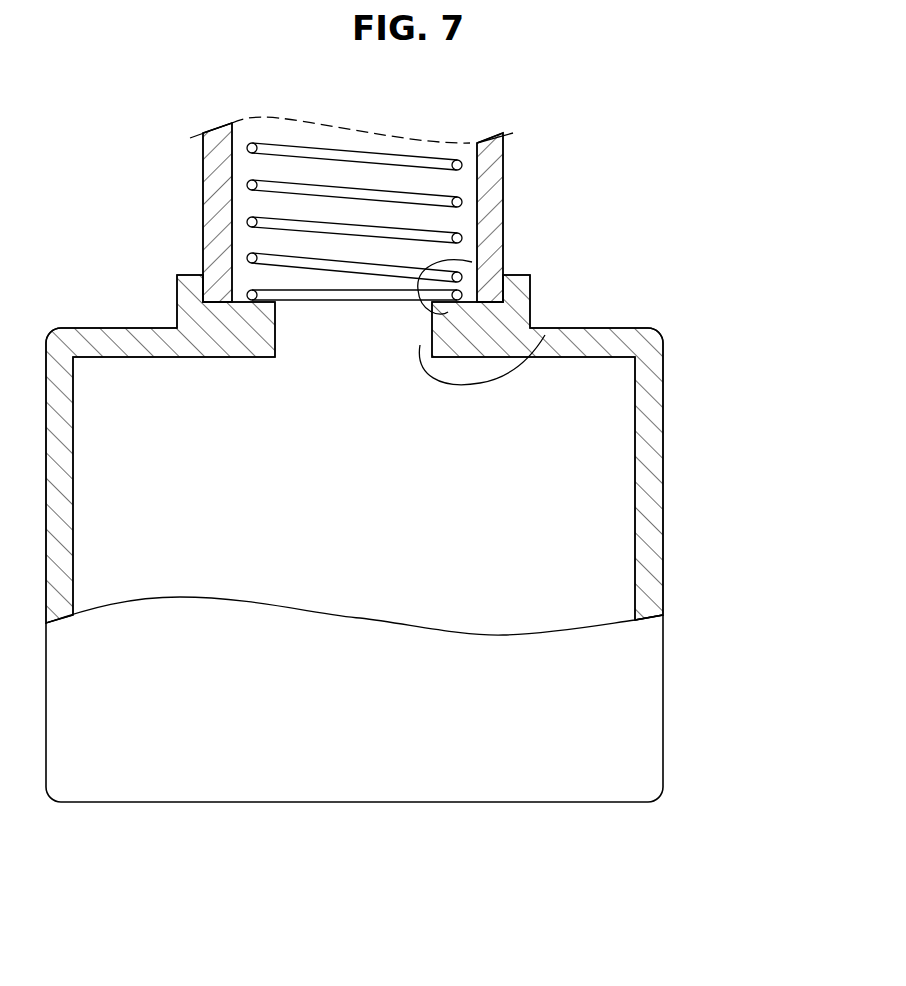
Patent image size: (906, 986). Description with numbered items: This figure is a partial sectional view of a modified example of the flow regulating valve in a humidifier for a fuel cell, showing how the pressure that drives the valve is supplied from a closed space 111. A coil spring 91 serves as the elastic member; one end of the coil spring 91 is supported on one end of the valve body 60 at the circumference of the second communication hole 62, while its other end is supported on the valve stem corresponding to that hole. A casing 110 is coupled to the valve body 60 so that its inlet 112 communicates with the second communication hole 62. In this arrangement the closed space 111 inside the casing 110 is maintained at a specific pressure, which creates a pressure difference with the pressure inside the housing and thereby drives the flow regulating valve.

The valve body 60 is at (510, 193).
The second communication hole 62 is at (472, 262).
The coil spring 91 is at (248, 185).
The casing 110 is at (668, 455).
The closed space 111 is at (370, 511).
The inlet 112 is at (545, 335).